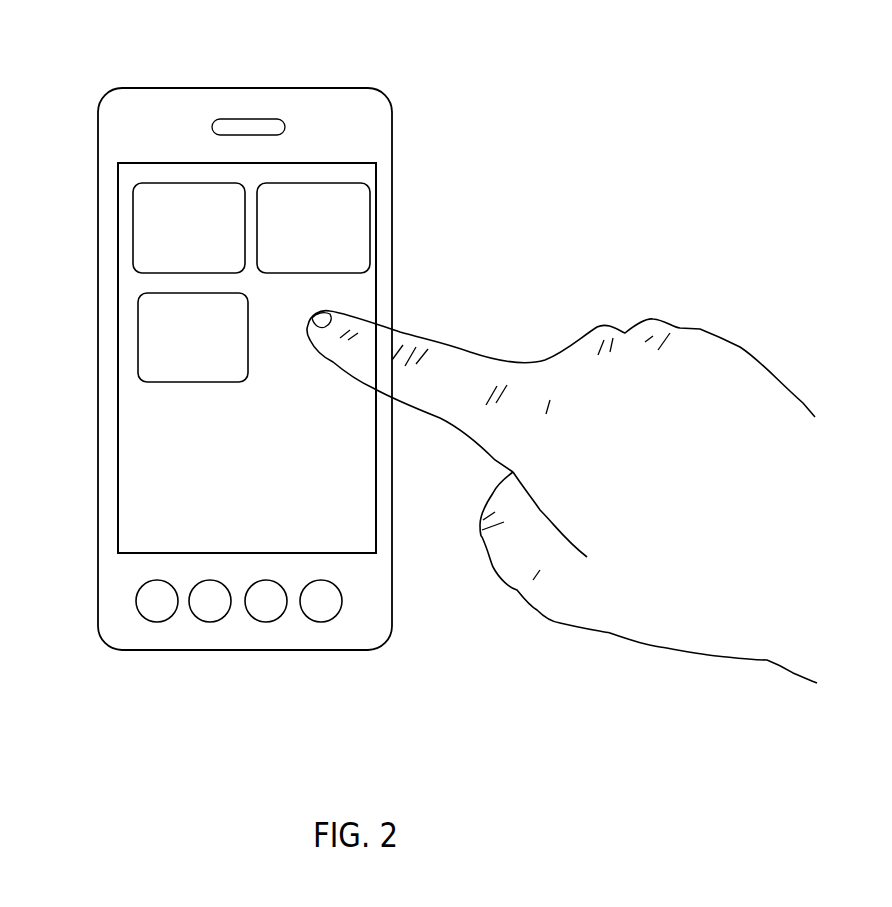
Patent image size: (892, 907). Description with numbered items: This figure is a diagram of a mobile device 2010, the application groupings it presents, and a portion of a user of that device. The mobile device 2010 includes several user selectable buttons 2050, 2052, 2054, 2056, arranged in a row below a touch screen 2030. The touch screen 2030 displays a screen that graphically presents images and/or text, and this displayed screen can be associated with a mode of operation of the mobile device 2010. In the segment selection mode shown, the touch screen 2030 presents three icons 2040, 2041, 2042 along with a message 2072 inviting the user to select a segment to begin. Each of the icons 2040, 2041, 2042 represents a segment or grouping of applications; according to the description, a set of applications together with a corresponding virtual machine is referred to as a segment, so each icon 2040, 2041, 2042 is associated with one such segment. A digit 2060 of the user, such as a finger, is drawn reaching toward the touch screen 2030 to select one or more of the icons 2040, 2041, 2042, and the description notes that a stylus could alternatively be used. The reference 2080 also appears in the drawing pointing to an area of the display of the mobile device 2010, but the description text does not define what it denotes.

The mobile device 2010 is at (243, 88).
The touch screen 2030 is at (309, 163).
The icon 2040 is at (189, 228).
The icon 2041 is at (313, 228).
The icon 2042 is at (193, 337).
The user selectable button 2050 is at (166, 618).
The user selectable button 2052 is at (219, 618).
The user selectable button 2054 is at (275, 618).
The user selectable button 2056 is at (335, 618).
The digit 2060 is at (452, 363).
The message 2072 is at (167, 489).
The display area 2080 is at (148, 437).